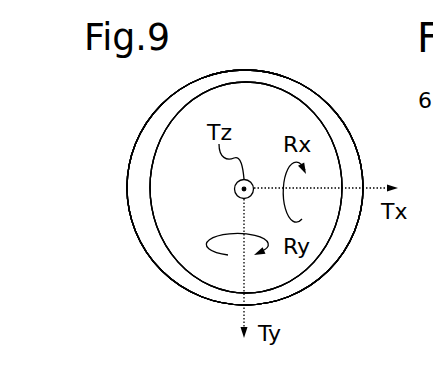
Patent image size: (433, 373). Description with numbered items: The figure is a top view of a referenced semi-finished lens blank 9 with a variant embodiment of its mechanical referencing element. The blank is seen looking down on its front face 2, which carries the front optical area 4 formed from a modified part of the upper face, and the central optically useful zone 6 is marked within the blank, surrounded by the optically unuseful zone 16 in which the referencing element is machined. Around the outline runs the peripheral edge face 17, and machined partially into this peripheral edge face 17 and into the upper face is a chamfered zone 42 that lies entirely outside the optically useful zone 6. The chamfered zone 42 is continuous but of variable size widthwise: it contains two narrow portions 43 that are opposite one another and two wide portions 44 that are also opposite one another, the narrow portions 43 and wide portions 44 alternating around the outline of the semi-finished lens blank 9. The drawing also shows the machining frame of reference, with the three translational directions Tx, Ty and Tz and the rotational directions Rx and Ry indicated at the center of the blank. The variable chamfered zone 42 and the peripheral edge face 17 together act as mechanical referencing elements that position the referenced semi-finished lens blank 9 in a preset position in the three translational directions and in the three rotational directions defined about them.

The front face 2 is at (201, 200).
The front optical area 4 is at (289, 112).
The optically useful zone 6 is at (192, 230).
The referenced semi-finished lens blank 9 is at (86, 296).
The optically unuseful zone 16 is at (142, 130).
The peripheral edge face 17 is at (330, 272).
The chamfered zone 42 is at (336, 123).
The narrow portions 43 is at (247, 77).
The wide portions 44 is at (126, 189).